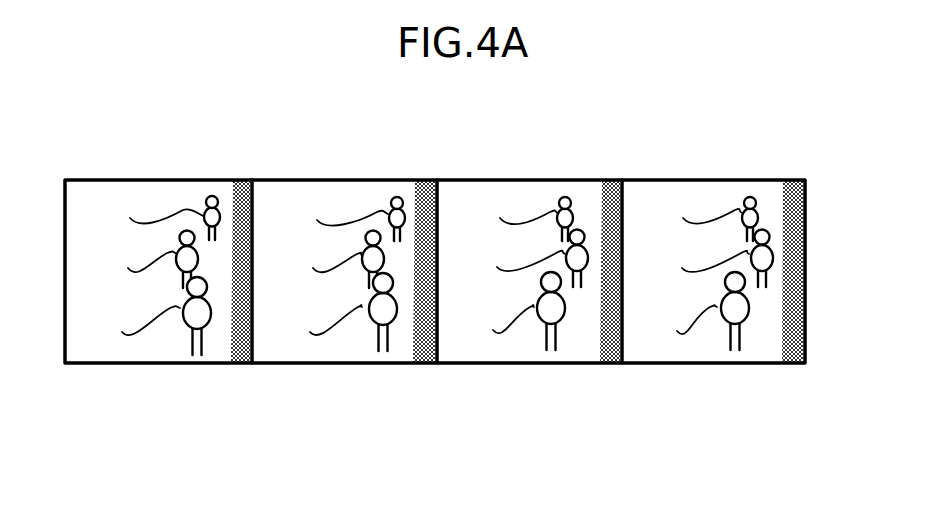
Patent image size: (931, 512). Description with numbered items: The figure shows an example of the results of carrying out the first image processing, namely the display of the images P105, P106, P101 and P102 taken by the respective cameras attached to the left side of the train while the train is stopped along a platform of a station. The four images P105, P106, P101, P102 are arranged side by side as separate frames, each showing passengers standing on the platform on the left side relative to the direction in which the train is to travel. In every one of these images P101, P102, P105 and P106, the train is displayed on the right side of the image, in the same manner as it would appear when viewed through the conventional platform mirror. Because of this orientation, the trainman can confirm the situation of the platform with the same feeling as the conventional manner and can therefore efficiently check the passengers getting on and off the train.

The image P105 is at (167, 363).
The image P106 is at (350, 363).
The image P101 is at (533, 363).
The image P102 is at (720, 363).